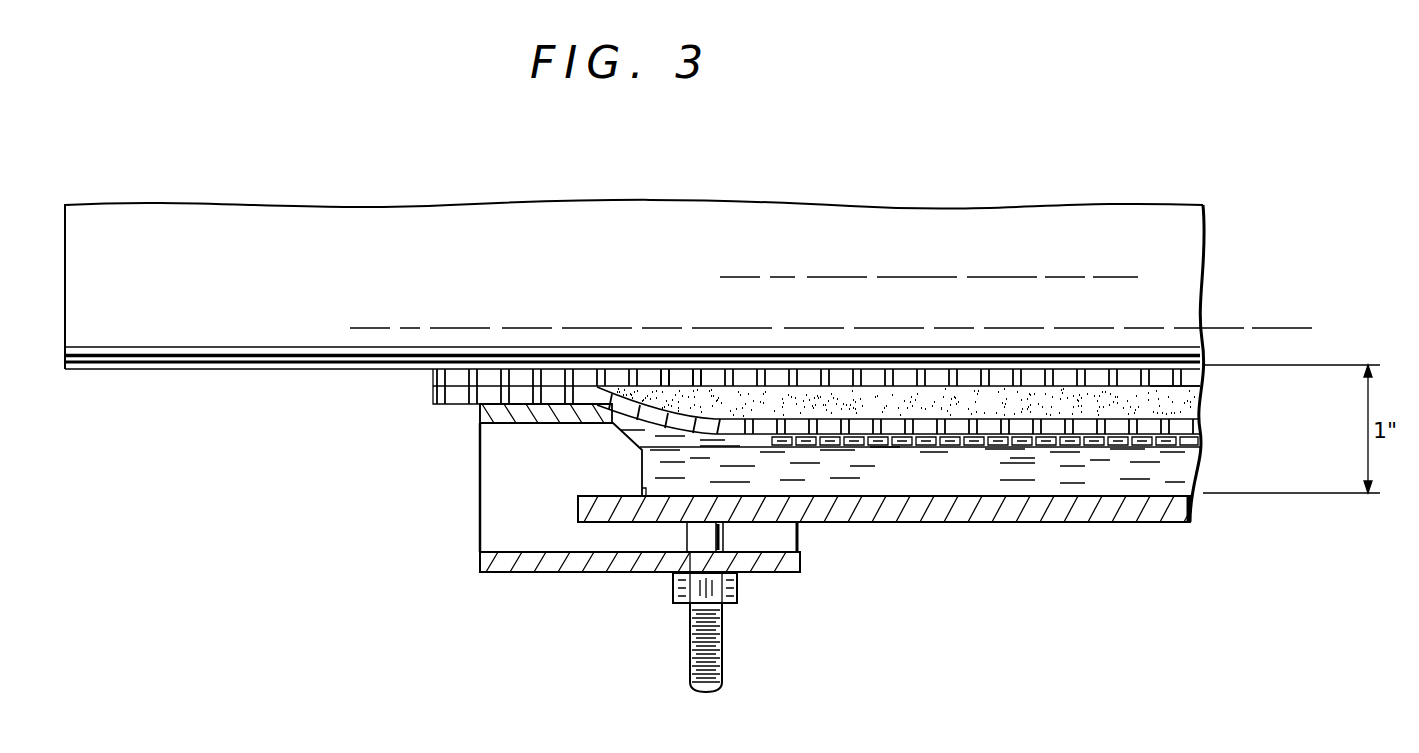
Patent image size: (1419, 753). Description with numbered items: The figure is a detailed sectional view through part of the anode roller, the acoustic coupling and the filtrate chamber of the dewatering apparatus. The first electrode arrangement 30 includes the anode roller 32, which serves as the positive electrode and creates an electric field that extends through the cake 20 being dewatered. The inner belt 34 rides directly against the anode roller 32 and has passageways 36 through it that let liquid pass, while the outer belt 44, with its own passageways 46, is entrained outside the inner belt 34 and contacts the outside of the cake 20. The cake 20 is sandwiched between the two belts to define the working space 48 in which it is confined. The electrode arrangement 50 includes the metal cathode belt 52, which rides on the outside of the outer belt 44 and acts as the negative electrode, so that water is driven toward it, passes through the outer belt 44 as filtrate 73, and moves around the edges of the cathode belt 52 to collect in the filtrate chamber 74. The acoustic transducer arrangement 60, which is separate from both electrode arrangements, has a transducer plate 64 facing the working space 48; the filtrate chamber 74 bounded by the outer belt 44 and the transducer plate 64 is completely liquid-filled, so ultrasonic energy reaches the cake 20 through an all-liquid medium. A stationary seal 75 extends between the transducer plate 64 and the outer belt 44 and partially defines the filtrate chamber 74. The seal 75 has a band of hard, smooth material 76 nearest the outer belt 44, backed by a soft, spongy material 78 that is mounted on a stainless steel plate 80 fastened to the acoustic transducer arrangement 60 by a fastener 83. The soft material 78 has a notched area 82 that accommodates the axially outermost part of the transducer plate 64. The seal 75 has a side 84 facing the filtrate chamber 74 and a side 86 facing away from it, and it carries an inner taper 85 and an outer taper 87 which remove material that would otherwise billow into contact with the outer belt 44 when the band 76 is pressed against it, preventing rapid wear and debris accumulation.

The cake 20 is at (1122, 390).
The first electrode arrangement 30 is at (783, 375).
The anode roller 32 is at (104, 378).
The inner belt 34 is at (440, 380).
The passageways 36 is at (705, 380).
The outer belt 44 is at (1200, 424).
The passageways 46 is at (446, 405).
The working space 48 is at (1205, 365).
The electrode arrangement 50 is at (1198, 444).
The cathode belt 52 is at (1142, 524).
The acoustic transducer arrangement 60 is at (865, 526).
The transducer plate 64 is at (1124, 524).
The filtrate 73 is at (993, 488).
The filtrate chamber 74 is at (1068, 490).
The seal 75 is at (520, 482).
The band of hard, smooth material 76 is at (530, 424).
The soft, spongy material 78 is at (485, 550).
The stainless steel plate 80 is at (520, 575).
The notched area 82 is at (610, 525).
The fastener 83 is at (740, 594).
The side 84 is at (648, 497).
The inner taper 85 is at (650, 447).
The side 86 is at (480, 508).
The outer taper 87 is at (481, 416).